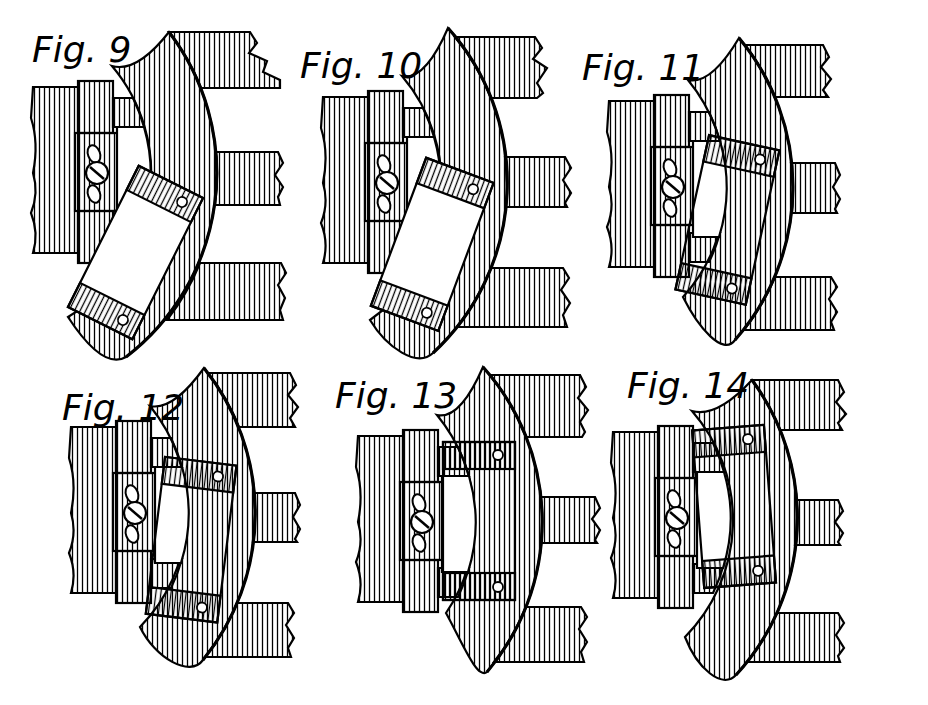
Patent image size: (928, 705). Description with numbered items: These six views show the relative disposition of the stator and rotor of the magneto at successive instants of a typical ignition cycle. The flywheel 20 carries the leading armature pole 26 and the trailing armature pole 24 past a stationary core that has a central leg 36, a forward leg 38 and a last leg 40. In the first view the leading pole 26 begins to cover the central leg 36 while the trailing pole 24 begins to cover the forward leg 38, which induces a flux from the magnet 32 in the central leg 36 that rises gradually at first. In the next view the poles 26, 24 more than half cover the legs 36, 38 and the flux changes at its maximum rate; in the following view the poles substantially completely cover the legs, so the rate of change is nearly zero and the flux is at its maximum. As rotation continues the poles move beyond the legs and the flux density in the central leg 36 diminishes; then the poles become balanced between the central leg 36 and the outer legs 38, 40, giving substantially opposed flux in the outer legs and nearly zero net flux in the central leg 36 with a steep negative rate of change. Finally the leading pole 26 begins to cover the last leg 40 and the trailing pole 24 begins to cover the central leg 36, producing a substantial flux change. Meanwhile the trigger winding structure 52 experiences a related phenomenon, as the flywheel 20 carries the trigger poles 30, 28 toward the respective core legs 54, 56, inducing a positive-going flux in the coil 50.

In FIG. 9, the flywheel 20 is at (142, 196).
In FIG. 9, the trailing armature pole 24 is at (171, 194).
In FIG. 10, the trailing armature pole 24 is at (470, 193).
In FIG. 11, the trailing armature pole 24 is at (781, 189).
In FIG. 12, the trailing armature pole 24 is at (244, 514).
In FIG. 13, the trailing armature pole 24 is at (529, 519).
In FIG. 14, the trailing armature pole 24 is at (781, 527).
In FIG. 9, the leading armature pole 26 is at (152, 250).
In FIG. 10, the leading armature pole 26 is at (435, 230).
In FIG. 11, the leading armature pole 26 is at (727, 203).
In FIG. 12, the leading armature pole 26 is at (215, 530).
In FIG. 13, the leading armature pole 26 is at (508, 521).
In FIG. 14, the leading armature pole 26 is at (760, 506).
In FIG. 9, the trigger pole 28 is at (100, 319).
In FIG. 9, the trigger pole 30 is at (165, 183).
In FIG. 9, the magnet 32 is at (135, 253).
In FIG. 9, the central leg 36 is at (249, 178).
In FIG. 10, the central leg 36 is at (538, 169).
In FIG. 11, the central leg 36 is at (815, 175).
In FIG. 12, the central leg 36 is at (276, 504).
In FIG. 13, the central leg 36 is at (572, 520).
In FIG. 14, the central leg 36 is at (819, 533).
In FIG. 9, the forward leg 38 is at (226, 291).
In FIG. 10, the forward leg 38 is at (513, 289).
In FIG. 11, the forward leg 38 is at (790, 316).
In FIG. 12, the forward leg 38 is at (259, 630).
In FIG. 13, the forward leg 38 is at (540, 634).
In FIG. 13, the last leg 40 is at (539, 406).
In FIG. 14, the last leg 40 is at (799, 405).
In FIG. 9, the coil 50 is at (91, 186).
In FIG. 9, the trigger winding structure 52 is at (53, 190).
In FIG. 9, the core leg 54 is at (133, 161).
In FIG. 9, the core leg 56 is at (96, 189).